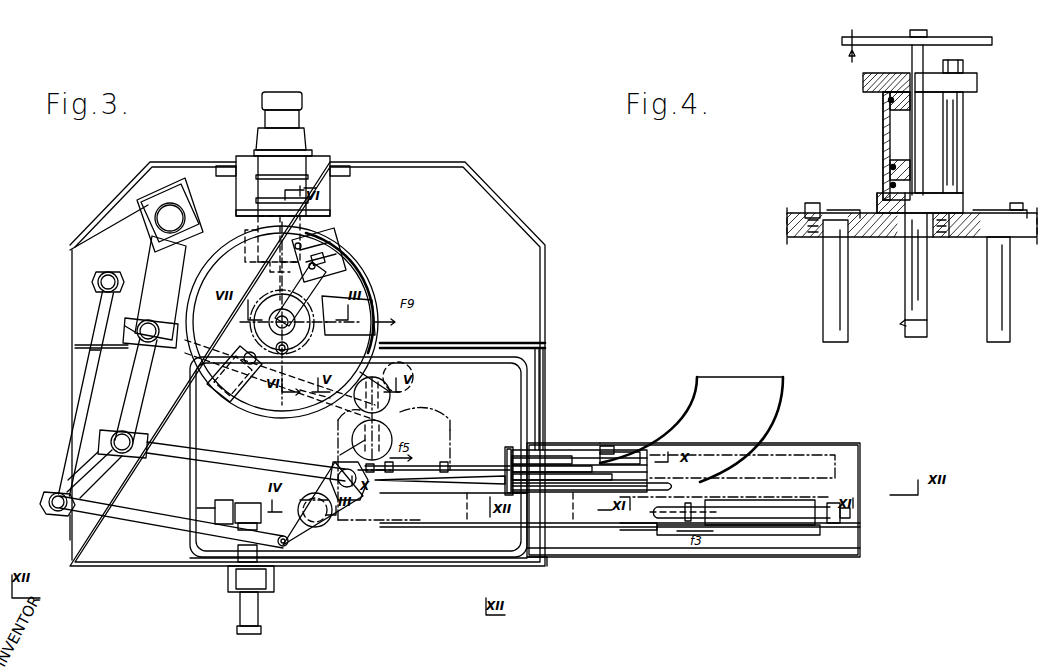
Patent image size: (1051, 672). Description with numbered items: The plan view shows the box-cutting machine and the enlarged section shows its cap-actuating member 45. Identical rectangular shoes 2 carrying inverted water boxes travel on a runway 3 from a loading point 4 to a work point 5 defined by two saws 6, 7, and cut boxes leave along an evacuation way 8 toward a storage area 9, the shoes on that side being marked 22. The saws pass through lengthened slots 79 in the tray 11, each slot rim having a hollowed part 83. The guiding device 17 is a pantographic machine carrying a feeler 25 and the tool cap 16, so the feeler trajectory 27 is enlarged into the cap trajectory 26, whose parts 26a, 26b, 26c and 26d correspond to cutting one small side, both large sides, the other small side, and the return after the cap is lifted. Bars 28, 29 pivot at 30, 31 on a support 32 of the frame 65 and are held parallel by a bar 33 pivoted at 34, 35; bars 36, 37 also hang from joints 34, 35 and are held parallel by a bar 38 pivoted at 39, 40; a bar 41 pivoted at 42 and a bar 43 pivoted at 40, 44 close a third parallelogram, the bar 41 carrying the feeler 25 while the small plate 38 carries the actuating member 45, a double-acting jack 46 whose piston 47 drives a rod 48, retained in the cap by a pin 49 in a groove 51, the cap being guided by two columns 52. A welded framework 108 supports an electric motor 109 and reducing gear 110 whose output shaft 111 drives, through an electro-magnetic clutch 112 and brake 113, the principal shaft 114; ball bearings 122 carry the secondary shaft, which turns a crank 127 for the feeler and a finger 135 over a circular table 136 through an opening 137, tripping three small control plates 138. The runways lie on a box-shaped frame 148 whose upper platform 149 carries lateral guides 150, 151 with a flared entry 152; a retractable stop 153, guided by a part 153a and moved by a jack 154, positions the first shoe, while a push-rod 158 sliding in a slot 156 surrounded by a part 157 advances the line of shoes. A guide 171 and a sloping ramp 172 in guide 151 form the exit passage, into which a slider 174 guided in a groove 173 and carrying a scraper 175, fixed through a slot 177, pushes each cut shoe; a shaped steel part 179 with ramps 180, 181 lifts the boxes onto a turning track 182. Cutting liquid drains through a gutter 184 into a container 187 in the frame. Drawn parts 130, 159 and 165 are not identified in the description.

In FIG. 3, the rectangular shoes 2 is at (712, 460).
In FIG. 3, the runway (entrance way) 3 is at (592, 542).
In FIG. 3, the loading point 4 is at (775, 536).
In FIG. 3, the work point 5 is at (345, 425).
In FIG. 3, the saw 6 is at (392, 410).
In FIG. 3, the saw 7 is at (398, 365).
In FIG. 3, the evacuation way 8 is at (648, 445).
In FIG. 3, the storage area 9 is at (824, 460).
In FIG. 3, the tray 11 is at (224, 486).
In FIG. 3, the tool cap 16 is at (340, 505).
In FIG. 3, the guiding device (pantographic machine) 17 is at (73, 407).
In FIG. 3, the shoes on evacuation way 22 is at (600, 468).
In FIG. 3, the feeler 25 is at (215, 330).
In FIG. 3, the trajectory of the cap 26 is at (410, 497).
In FIG. 3, the first part of trajectory 26a is at (335, 432).
In FIG. 3, the second part of trajectory 26b is at (425, 410).
In FIG. 3, the third part of trajectory 26c is at (438, 440).
In FIG. 3, the final part of trajectory 26d is at (372, 520).
In FIG. 3, the trajectory of the feeler 27 is at (258, 302).
In FIG. 3, the bar 28 is at (88, 356).
In FIG. 3, the bar 29 is at (88, 383).
In FIG. 3, the pivot 30 is at (98, 278).
In FIG. 3, the pivot 31 is at (175, 190).
In FIG. 3, the support 32 is at (118, 228).
In FIG. 3, the bar 33 is at (95, 466).
In FIG. 3, the joint 34 is at (46, 498).
In FIG. 3, the joint 35 is at (100, 438).
In FIG. 3, the bar 36 is at (72, 480).
In FIG. 3, the bar 37 is at (158, 450).
In FIG. 3, the small plate (bar) 38 is at (302, 525).
In FIG. 4, the small plate (bar) 38 is at (866, 238).
In FIG. 3, the pivot 39 is at (122, 458).
In FIG. 3, the pivot 40 is at (340, 470).
In FIG. 3, the bar 41 is at (160, 315).
In FIG. 3, the pivot 42 is at (128, 332).
In FIG. 3, the bar 43 is at (350, 447).
In FIG. 3, the pivot 44 is at (374, 378).
In FIG. 3, the actuating member 45 is at (318, 528).
In FIG. 4, the actuating member 45 is at (917, 112).
In FIG. 4, the double-acting jack 46 is at (882, 126).
In FIG. 4, the piston 47 is at (886, 156).
In FIG. 4, the rod 48 is at (928, 280).
In FIG. 4, the pin 49 is at (928, 322).
In FIG. 4, the groove 51 is at (905, 322).
In FIG. 4, the columns 52 is at (848, 288).
In FIG. 3, the frame 65 is at (528, 280).
In FIG. 3, the lengthened slots 79 is at (311, 392).
In FIG. 3, the hollowed part 83 is at (388, 392).
In FIG. 3, the welded framework 108 is at (330, 205).
In FIG. 3, the electric motor 109 is at (292, 90).
In FIG. 3, the reducing gear 110 is at (292, 140).
In FIG. 3, the output shaft 111 is at (262, 230).
In FIG. 3, the electro-magnetic clutch 112 is at (262, 212).
In FIG. 3, the electro-magnetic brake 113 is at (252, 240).
In FIG. 3, the principal shaft 114 is at (268, 264).
In FIG. 3, the ball bearing 122 is at (268, 316).
In FIG. 3, the crank 127 is at (270, 350).
In FIG. 3, the block 130 is at (240, 369).
In FIG. 3, the finger 135 is at (330, 270).
In FIG. 3, the circular table 136 is at (348, 278).
In FIG. 3, the circular opening 137 is at (272, 296).
In FIG. 3, the small control plates 138 is at (322, 238).
In FIG. 3, the box shaped frame 148 is at (860, 460).
In FIG. 3, the upper platform 149 is at (748, 549).
In FIG. 3, the lateral guide 150 is at (475, 542).
In FIG. 3, the lateral guide 151 is at (472, 466).
In FIG. 3, the entry 152 is at (672, 490).
In FIG. 3, the retractable stop 153 is at (240, 500).
In FIG. 3, the guiding part 153a is at (212, 510).
In FIG. 3, the jack 154 is at (240, 604).
In FIG. 3, the slot 156 is at (790, 516).
In FIG. 3, the surrounding part 157 is at (852, 512).
In FIG. 3, the push-rod 158 is at (822, 508).
In FIG. 3, the block 159 is at (248, 503).
In FIG. 3, the bracket 165 is at (230, 588).
In FIG. 3, the guide 171 is at (566, 470).
In FIG. 3, the lateral sloping ramp 172 is at (475, 492).
In FIG. 3, the groove 173 is at (432, 466).
In FIG. 3, the slider 174 is at (500, 460).
In FIG. 3, the scraper 175 is at (378, 473).
In FIG. 3, the slot 177 is at (625, 458).
In FIG. 3, the shaped steel part 179 is at (786, 378).
In FIG. 3, the ascending sloping ramp 180 is at (545, 462).
In FIG. 3, the ascending sloping ramp 181 is at (580, 478).
In FIG. 3, the ascending and turning track 182 is at (684, 428).
In FIG. 3, the gutter 184 is at (520, 560).
In FIG. 3, the container 187 is at (72, 525).